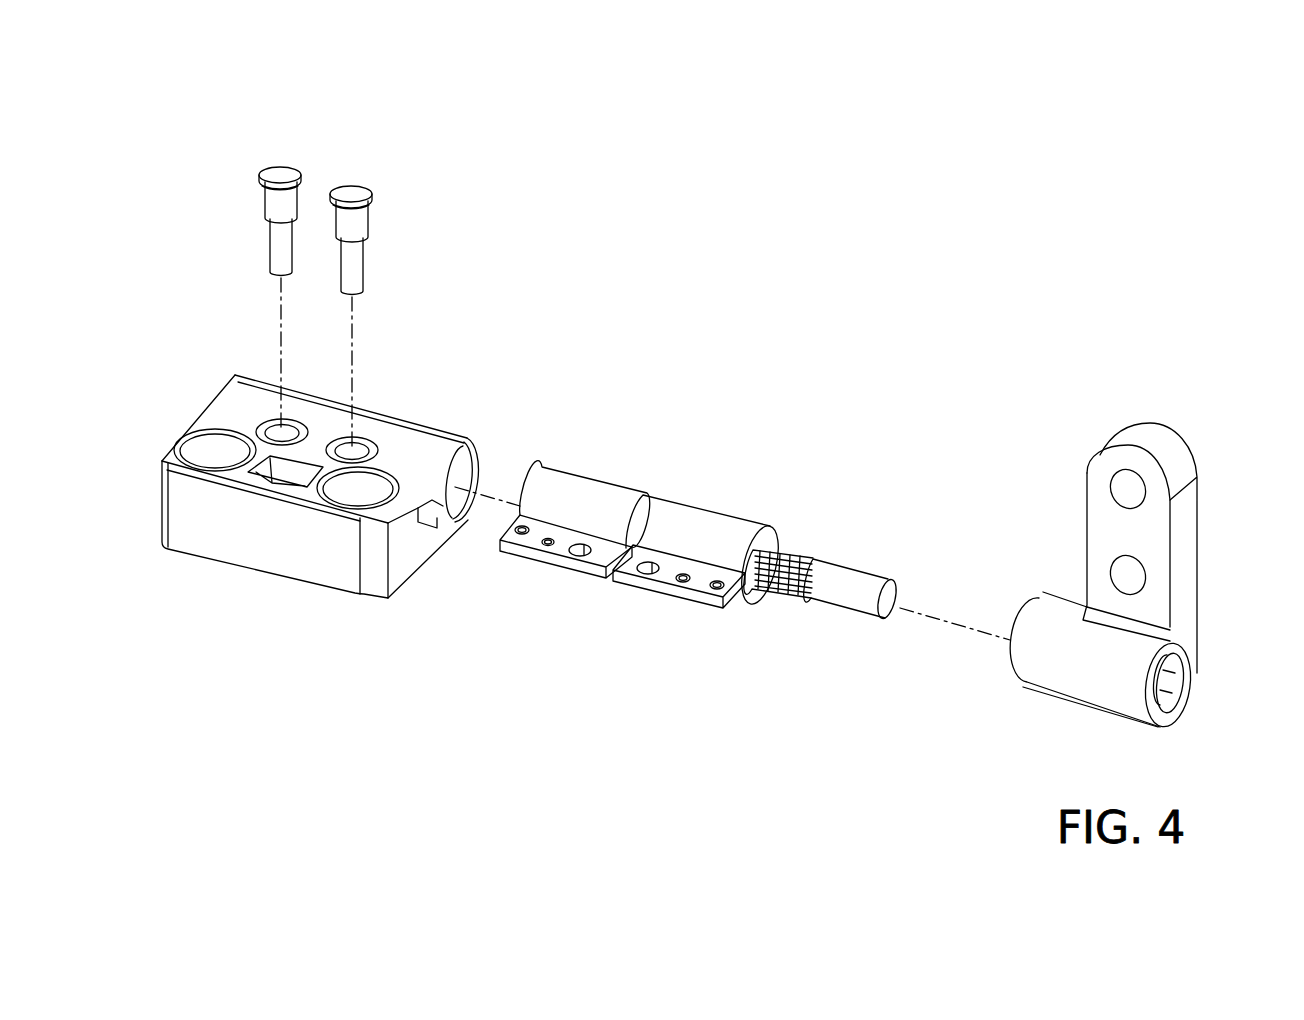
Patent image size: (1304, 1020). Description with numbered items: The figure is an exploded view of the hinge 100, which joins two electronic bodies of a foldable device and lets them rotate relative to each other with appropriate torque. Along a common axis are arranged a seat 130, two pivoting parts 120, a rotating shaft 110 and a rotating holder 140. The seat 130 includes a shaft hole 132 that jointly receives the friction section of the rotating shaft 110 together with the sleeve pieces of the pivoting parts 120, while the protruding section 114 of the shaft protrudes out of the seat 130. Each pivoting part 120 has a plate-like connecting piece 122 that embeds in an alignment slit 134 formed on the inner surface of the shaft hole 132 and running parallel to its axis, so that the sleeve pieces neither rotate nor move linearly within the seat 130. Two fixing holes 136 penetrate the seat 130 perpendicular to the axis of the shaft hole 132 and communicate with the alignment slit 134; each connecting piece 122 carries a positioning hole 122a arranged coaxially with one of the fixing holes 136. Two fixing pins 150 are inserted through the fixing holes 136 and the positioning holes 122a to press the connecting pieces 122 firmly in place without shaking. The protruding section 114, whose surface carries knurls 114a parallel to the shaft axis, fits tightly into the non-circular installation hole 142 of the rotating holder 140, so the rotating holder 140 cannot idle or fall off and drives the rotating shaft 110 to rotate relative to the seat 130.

The hinge 100 is at (872, 287).
The rotating shaft 110 is at (824, 567).
The protruding section 114 is at (800, 611).
The knurls 114a is at (784, 543).
The pivoting part 120 is at (605, 572).
The connecting piece 122 is at (527, 540).
The positioning hole 122a is at (582, 548).
The seat 130 is at (272, 562).
The shaft hole 132 is at (458, 477).
The alignment slit 134 is at (428, 519).
The fixing hole 136 is at (278, 432).
The rotating holder 140 is at (1146, 516).
The installation hole 142 is at (1166, 688).
The fixing pin 150 is at (262, 163).